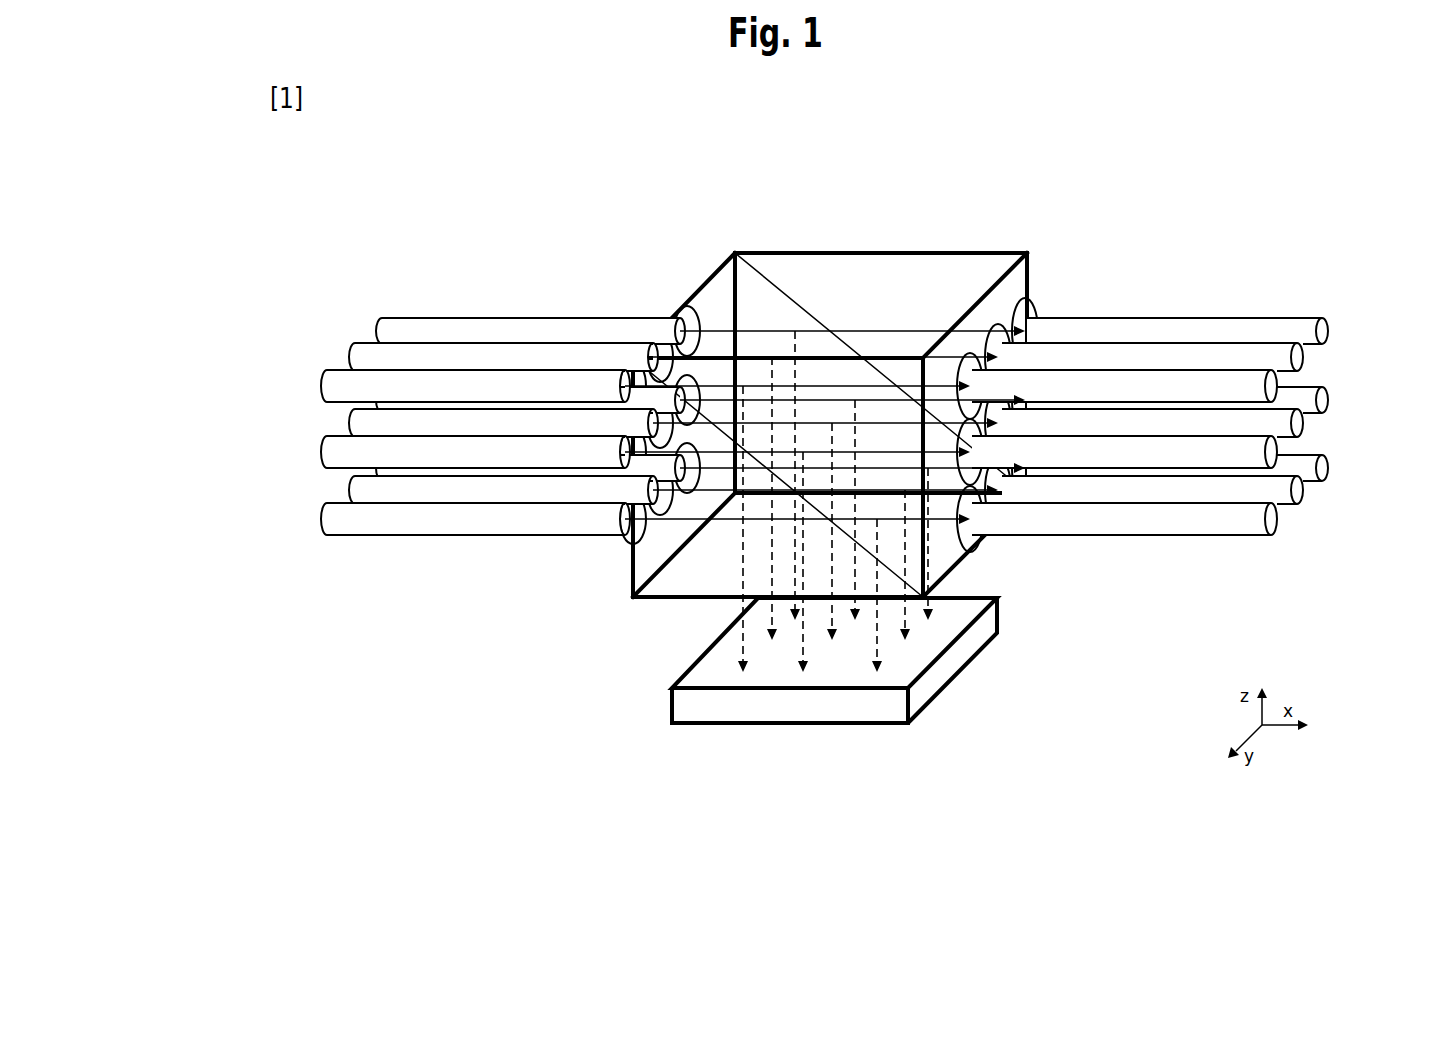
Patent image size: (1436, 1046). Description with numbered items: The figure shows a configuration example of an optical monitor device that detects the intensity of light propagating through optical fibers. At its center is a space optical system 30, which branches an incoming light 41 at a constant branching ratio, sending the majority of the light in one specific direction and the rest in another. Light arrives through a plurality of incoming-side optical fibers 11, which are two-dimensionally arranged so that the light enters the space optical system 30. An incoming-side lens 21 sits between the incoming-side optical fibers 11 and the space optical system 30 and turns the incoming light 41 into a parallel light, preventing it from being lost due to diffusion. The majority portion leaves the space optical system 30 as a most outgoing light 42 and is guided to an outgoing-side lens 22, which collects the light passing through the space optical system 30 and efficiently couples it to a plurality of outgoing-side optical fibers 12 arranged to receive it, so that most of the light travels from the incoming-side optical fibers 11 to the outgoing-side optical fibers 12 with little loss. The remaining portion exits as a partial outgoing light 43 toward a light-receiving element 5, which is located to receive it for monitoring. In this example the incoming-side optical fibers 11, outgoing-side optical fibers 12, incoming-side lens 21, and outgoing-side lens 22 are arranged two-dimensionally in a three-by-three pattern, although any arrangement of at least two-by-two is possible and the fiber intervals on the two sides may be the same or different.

The incoming-side optical fiber 11 is at (390, 327).
The incoming-side lens 21 is at (683, 301).
The space optical system 30 is at (879, 273).
The outgoing-side lens 22 is at (1034, 308).
The outgoing-side optical fiber 12 is at (1290, 327).
The incoming light 41 is at (690, 518).
The most outgoing light 42 is at (972, 545).
The partial outgoing light 43 is at (905, 612).
The light-receiving element 5 is at (847, 708).